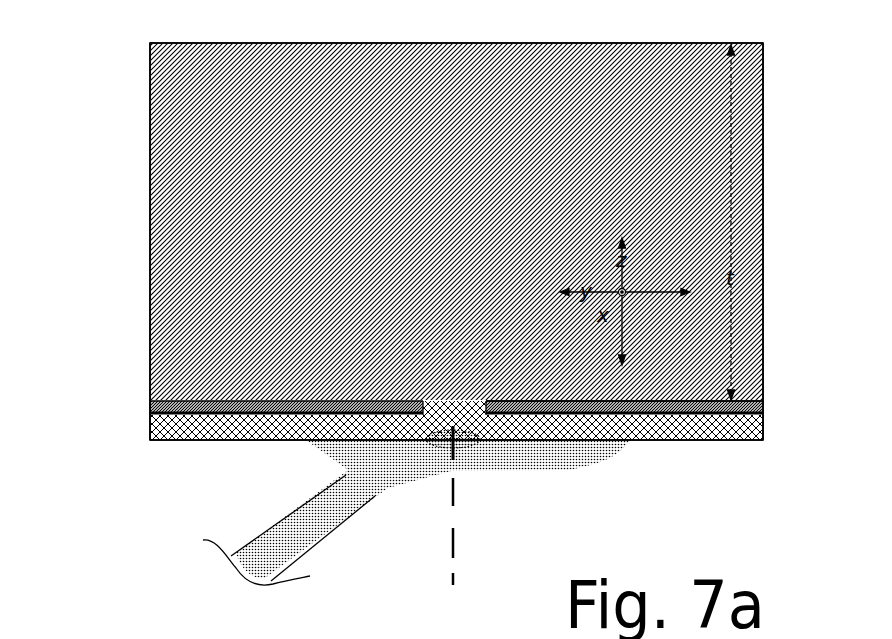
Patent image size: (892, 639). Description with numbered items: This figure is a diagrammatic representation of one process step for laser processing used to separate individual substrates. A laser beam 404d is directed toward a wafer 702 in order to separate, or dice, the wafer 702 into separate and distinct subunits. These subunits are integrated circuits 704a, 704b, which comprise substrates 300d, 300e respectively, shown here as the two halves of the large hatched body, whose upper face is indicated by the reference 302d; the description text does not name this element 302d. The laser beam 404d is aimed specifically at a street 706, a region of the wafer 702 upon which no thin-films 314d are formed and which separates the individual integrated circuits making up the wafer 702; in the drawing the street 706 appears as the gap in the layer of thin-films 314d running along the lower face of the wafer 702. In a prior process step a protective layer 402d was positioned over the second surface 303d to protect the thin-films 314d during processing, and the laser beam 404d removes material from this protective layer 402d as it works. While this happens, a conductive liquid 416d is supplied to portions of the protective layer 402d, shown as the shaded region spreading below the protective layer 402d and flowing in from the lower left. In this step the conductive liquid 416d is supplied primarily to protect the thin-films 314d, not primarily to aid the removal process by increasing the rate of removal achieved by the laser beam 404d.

The wafer 702 is at (112, 42).
The substrate 300d is at (278, 159).
The substrate 300e is at (644, 164).
The top surface of membrane 302d is at (648, 30).
The integrated circuit 704a is at (138, 213).
The integrated circuit 704b is at (758, 180).
The thin-films 314d is at (142, 397).
The protective layer 402d is at (142, 415).
The street 706 is at (439, 392).
The second surface 303d is at (575, 400).
The conductive liquid 416d is at (404, 460).
The laser beam 404d is at (455, 505).